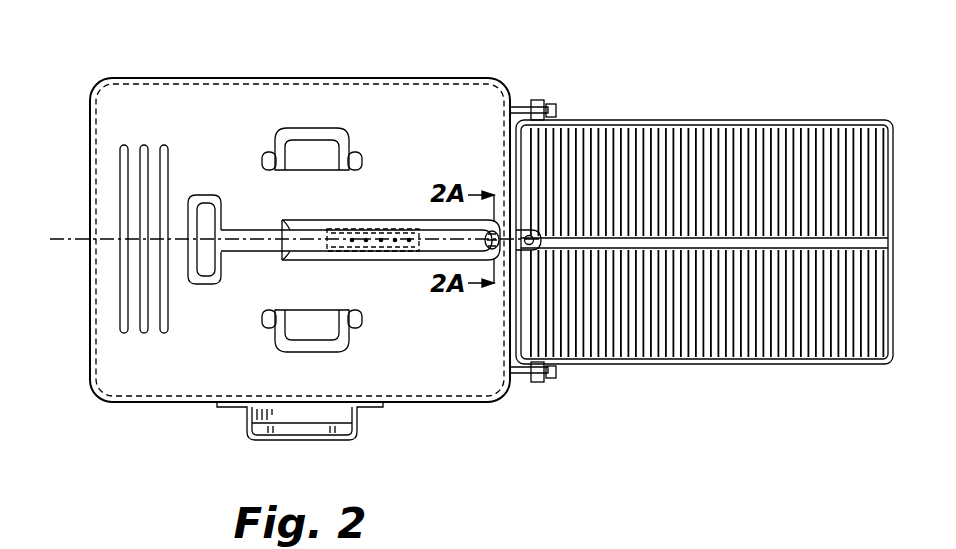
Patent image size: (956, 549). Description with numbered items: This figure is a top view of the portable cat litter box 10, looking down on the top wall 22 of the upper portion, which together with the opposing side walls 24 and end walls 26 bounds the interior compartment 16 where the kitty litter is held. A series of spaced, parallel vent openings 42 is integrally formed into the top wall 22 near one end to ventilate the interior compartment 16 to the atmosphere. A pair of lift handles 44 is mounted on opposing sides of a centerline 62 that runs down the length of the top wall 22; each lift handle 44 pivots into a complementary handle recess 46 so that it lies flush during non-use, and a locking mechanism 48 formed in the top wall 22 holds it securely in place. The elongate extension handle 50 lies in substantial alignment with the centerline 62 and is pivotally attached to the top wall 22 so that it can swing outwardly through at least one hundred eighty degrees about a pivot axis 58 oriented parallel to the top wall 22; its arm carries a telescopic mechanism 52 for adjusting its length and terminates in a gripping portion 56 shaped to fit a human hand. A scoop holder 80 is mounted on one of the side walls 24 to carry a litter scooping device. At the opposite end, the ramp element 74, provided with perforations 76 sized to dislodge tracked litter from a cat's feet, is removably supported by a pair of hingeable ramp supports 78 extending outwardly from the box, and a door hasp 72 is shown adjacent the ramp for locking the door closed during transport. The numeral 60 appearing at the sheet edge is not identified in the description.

The portable cat litter box 10 is at (750, 58).
The interior compartment 16 is at (120, 102).
The top wall 22 is at (807, 538).
The side walls 24 is at (143, 78).
The end walls 26 is at (510, 160).
The vent openings 42 is at (165, 165).
The lift handle 44 is at (325, 128).
The handle recess 46 is at (247, 259).
The locking mechanism 48 is at (283, 243).
The extension handle 50 is at (205, 277).
The telescopic mechanism 52 is at (372, 235).
The gripping portion 56 is at (205, 207).
The pivot axis 58 is at (492, 178).
The support 60 is at (648, 540).
The centerline 62 is at (75, 238).
The door hasp 72 is at (541, 248).
The ramp element 74 is at (648, 125).
The perforations 76 is at (760, 165).
The ramp supports 78 is at (530, 100).
The scoop holder 80 is at (313, 440).